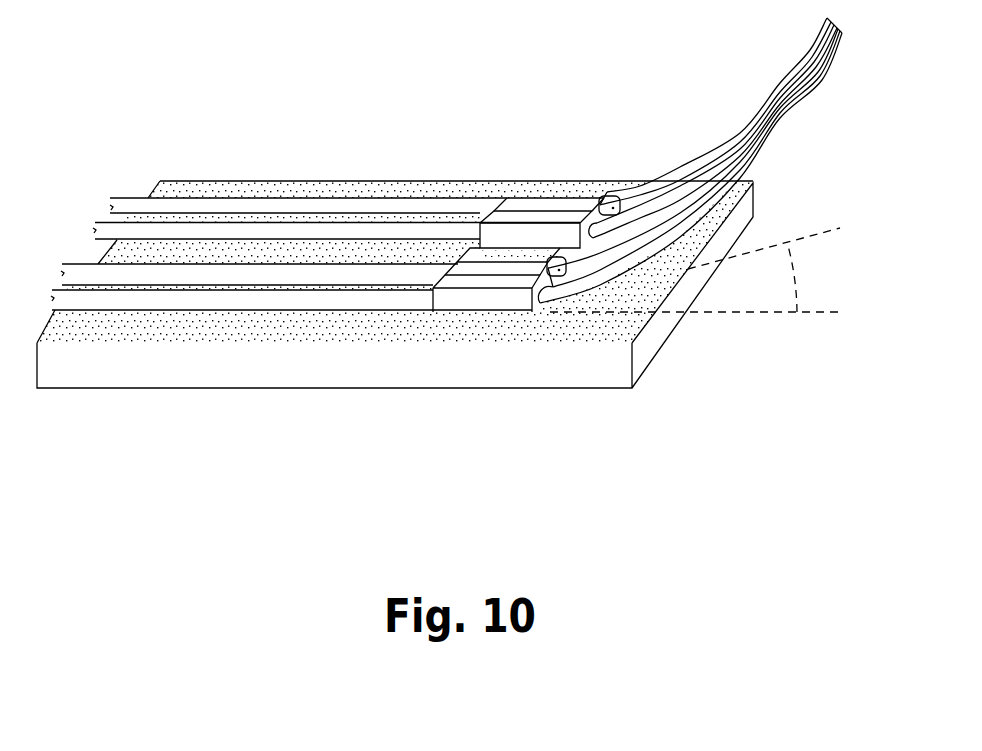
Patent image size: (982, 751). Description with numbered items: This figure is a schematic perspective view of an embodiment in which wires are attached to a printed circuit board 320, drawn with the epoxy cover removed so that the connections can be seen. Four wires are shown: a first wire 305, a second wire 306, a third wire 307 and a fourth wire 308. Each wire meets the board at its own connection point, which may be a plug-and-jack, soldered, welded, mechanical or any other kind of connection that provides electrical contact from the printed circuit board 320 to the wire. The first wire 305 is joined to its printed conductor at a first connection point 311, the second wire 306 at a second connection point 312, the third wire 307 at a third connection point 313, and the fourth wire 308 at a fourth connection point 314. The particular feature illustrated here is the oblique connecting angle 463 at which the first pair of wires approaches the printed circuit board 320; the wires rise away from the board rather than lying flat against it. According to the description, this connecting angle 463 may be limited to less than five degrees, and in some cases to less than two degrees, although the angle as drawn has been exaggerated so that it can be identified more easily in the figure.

The printed circuit board 320 is at (190, 181).
The second connection point 312 is at (500, 211).
The first connection point 311 is at (562, 198).
The third connection point 313 is at (492, 263).
The fourth connection point 314 is at (440, 300).
The first wire 305 is at (621, 193).
The second wire 306 is at (676, 178).
The third wire 307 is at (596, 250).
The fourth wire 308 is at (547, 306).
The oblique connecting angle 463 is at (823, 278).